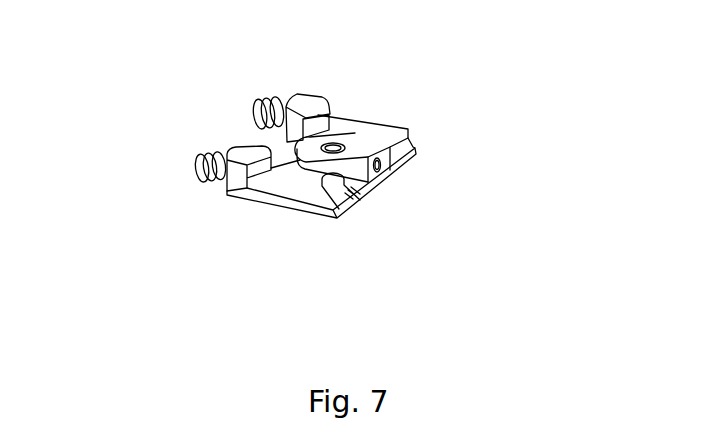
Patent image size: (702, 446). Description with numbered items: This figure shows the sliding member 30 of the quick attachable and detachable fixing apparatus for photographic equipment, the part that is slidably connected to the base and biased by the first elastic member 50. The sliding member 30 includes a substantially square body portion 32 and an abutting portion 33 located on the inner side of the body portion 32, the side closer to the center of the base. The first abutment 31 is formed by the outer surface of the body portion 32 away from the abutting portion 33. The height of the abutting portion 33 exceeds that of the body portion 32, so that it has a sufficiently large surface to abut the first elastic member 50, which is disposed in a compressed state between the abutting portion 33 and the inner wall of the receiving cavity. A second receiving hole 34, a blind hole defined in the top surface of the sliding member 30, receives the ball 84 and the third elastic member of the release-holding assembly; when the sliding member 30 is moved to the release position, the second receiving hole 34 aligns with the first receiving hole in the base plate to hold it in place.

The sliding member 30 is at (433, 142).
The first abutment 31 is at (343, 216).
The body portion 32 is at (387, 124).
The abutting portion 33 is at (307, 100).
The second receiving hole 34 is at (338, 141).
The ball 84 is at (375, 128).
The first elastic member 50 is at (258, 97).